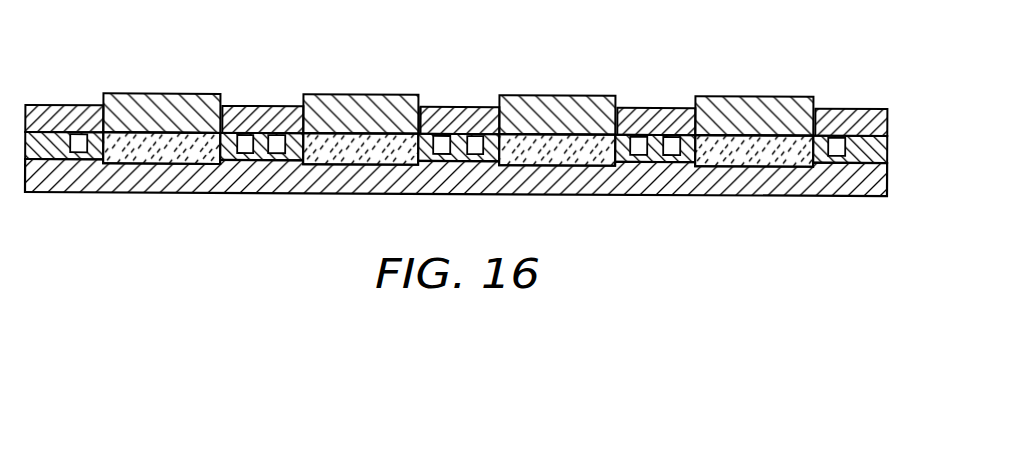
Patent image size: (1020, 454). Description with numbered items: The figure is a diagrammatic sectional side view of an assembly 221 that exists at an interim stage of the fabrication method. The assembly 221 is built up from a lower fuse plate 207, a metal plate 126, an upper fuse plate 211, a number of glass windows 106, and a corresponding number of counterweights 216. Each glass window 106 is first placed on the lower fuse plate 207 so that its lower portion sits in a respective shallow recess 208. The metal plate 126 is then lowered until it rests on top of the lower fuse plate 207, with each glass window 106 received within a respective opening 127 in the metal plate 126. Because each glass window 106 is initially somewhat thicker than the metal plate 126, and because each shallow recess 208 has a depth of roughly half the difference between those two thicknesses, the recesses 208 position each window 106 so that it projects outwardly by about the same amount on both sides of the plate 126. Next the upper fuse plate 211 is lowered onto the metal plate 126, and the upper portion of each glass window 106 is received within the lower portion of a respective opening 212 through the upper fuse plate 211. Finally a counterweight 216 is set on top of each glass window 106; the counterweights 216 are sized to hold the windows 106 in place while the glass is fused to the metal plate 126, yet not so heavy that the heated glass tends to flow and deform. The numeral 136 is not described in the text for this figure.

The glass window 106 is at (733, 162).
The metal plate 126 is at (622, 157).
The opening 127 is at (417, 135).
The conductive via 136 is at (833, 156).
The lower fuse plate 207 is at (503, 192).
The shallow recess 208 is at (160, 155).
The upper fuse plate 211 is at (64, 107).
The opening 212 is at (423, 110).
The counterweight 216 is at (357, 98).
The assembly 221 is at (519, 65).